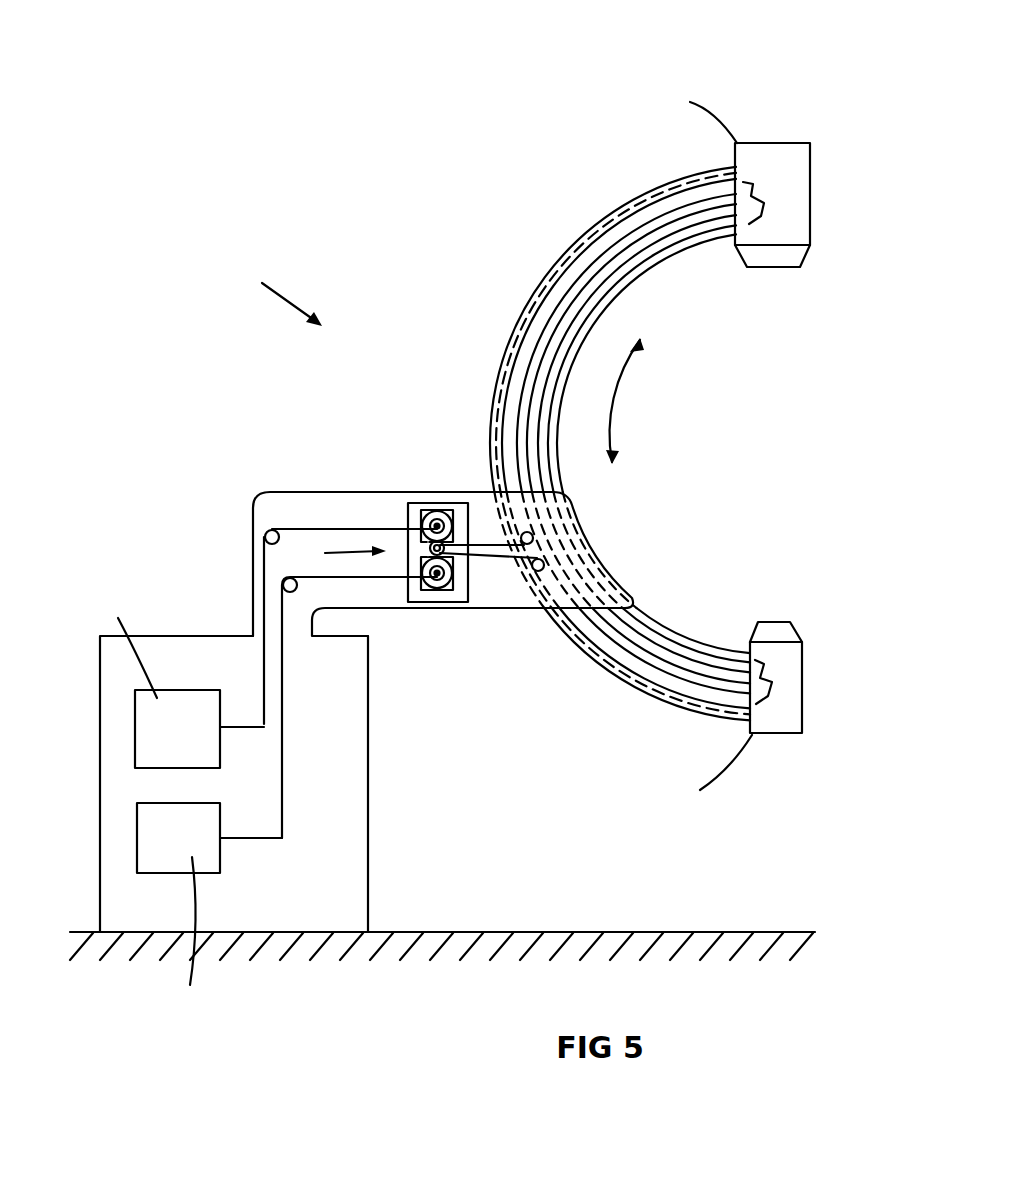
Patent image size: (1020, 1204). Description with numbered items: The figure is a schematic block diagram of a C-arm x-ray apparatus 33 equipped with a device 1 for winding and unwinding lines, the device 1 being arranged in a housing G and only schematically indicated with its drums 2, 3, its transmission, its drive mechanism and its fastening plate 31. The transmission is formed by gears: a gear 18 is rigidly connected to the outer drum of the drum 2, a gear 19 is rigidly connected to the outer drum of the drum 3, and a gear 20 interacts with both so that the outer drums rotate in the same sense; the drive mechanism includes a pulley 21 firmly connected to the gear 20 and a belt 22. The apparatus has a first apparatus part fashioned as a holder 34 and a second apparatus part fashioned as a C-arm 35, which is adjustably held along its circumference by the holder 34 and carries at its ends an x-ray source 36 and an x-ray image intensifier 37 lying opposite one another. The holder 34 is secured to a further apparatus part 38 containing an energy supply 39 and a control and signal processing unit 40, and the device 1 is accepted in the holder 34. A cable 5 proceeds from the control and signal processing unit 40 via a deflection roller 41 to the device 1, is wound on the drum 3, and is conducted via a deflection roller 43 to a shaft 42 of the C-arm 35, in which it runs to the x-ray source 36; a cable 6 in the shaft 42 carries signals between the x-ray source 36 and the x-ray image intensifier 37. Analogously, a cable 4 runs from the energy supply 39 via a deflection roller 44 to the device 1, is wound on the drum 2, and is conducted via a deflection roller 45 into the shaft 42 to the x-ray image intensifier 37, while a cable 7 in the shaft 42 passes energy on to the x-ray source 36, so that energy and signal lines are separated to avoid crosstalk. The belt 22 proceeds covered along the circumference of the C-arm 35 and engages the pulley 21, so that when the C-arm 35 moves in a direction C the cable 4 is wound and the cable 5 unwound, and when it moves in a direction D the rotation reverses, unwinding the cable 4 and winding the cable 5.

The device for winding and unwinding lines 1 is at (302, 566).
The drum 2 is at (432, 510).
The drum 3 is at (437, 597).
The cable 4 is at (603, 252).
The cable 5 is at (283, 808).
The cable 6 is at (652, 230).
The cable 7 is at (680, 233).
The gear 18 is at (437, 510).
The gear 19 is at (440, 586).
The gear 20 is at (408, 507).
The pulley 21 is at (422, 553).
The belt 22 is at (527, 302).
The fastening plate 31 is at (452, 590).
The C-arm x-ray apparatus 33 is at (224, 292).
The holder 34 is at (622, 575).
The C-arm 35 is at (712, 643).
The x-ray source 36 is at (777, 630).
The x-ray image intensifier 37 is at (775, 157).
The apparatus part 38 is at (370, 862).
The energy supply 39 is at (153, 728).
The control and signal processing unit 40 is at (157, 835).
The deflection roller 41 is at (284, 580).
The shaft 42 is at (762, 207).
The deflection roller 43 is at (566, 612).
The deflection roller 44 is at (266, 533).
The deflection roller 45 is at (533, 538).
The housing G is at (428, 546).
The direction D is at (633, 387).
The direction C is at (614, 478).